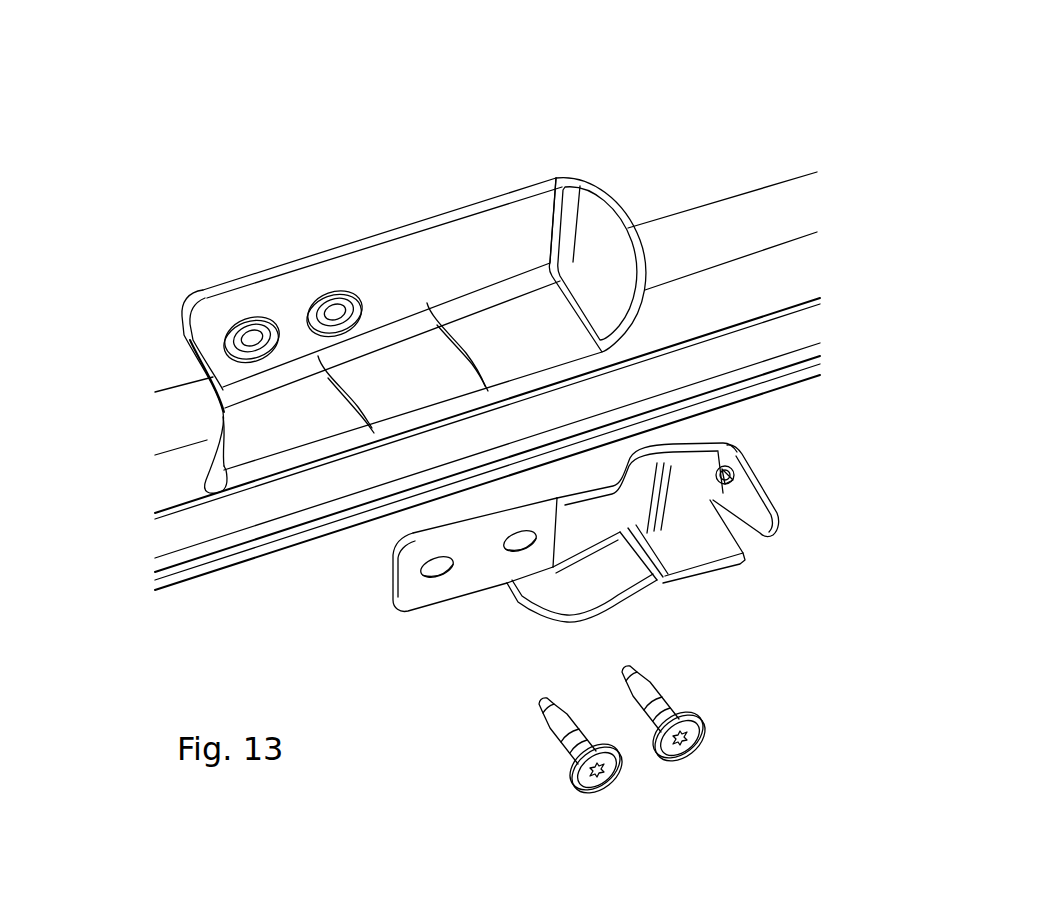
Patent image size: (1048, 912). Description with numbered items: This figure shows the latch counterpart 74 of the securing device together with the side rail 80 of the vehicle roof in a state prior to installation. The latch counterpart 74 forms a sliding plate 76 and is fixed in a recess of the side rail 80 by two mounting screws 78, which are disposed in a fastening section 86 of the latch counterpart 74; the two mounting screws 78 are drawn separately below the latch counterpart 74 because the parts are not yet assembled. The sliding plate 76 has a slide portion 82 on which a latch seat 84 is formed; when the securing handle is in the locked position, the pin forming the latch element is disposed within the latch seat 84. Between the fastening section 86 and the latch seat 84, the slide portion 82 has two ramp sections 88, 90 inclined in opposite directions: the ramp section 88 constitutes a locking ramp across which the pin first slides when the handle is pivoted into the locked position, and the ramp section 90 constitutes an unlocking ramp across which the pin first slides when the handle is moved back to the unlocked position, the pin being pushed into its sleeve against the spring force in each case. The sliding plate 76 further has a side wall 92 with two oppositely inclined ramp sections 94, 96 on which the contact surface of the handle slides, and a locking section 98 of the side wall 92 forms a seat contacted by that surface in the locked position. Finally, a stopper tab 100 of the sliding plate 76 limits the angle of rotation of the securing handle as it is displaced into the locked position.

The side rail 80 is at (531, 317).
The slide portion 82 is at (527, 557).
The latch seat 84 is at (642, 576).
The fastening section 86 is at (430, 556).
The ramp section 88 is at (750, 414).
The ramp section 90 is at (737, 428).
The side wall 92 is at (553, 620).
The ramp section 94 is at (628, 578).
The ramp section 96 is at (658, 572).
The locking section 98 is at (710, 548).
The stopper tab 100 is at (844, 503).
The latch counterpart 74 is at (763, 479).
The sliding plate 76 is at (848, 466).
The mounting screws 78 is at (603, 785).